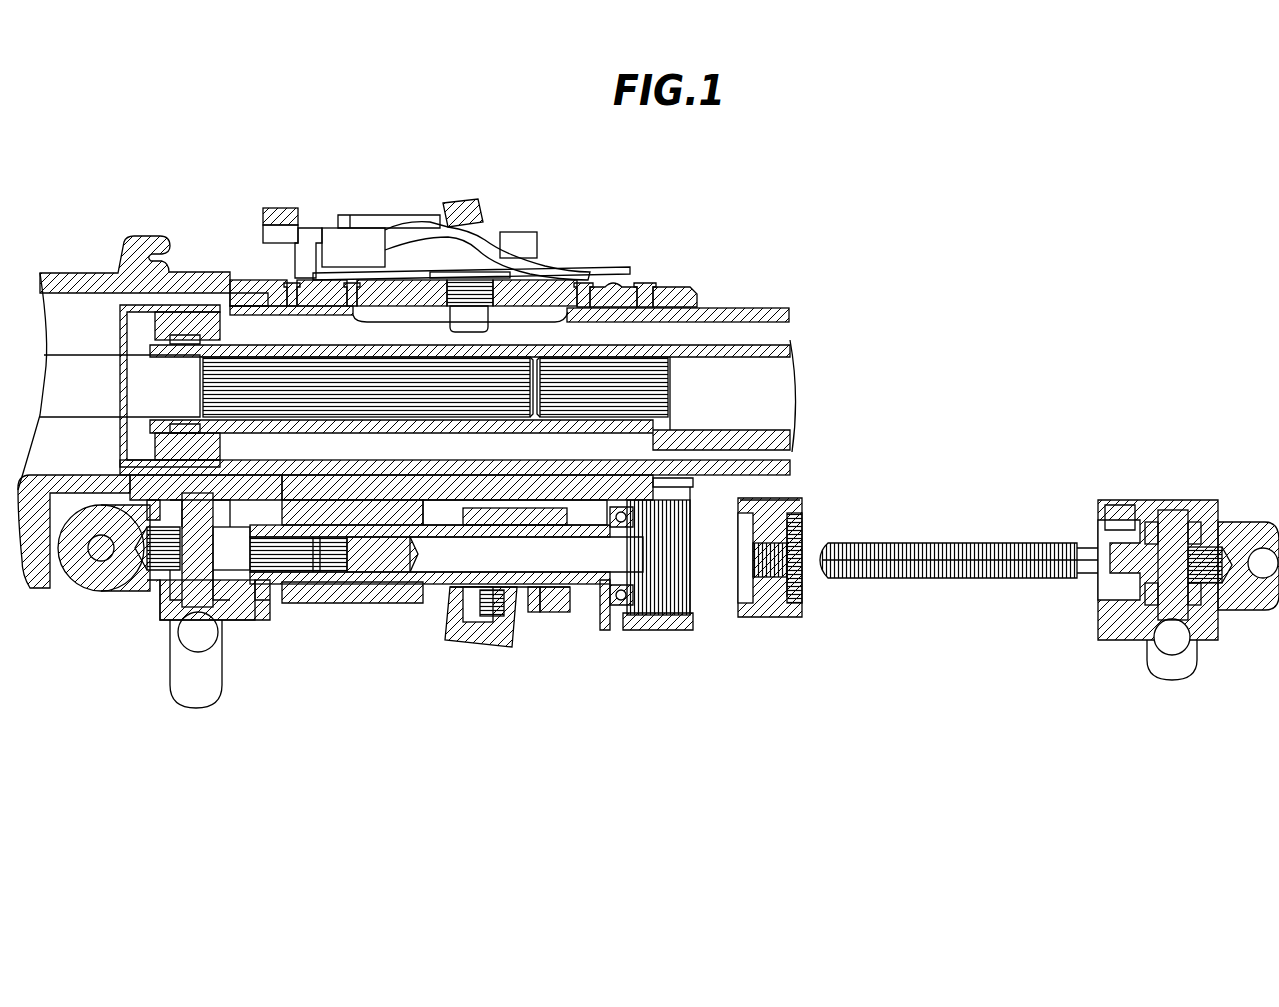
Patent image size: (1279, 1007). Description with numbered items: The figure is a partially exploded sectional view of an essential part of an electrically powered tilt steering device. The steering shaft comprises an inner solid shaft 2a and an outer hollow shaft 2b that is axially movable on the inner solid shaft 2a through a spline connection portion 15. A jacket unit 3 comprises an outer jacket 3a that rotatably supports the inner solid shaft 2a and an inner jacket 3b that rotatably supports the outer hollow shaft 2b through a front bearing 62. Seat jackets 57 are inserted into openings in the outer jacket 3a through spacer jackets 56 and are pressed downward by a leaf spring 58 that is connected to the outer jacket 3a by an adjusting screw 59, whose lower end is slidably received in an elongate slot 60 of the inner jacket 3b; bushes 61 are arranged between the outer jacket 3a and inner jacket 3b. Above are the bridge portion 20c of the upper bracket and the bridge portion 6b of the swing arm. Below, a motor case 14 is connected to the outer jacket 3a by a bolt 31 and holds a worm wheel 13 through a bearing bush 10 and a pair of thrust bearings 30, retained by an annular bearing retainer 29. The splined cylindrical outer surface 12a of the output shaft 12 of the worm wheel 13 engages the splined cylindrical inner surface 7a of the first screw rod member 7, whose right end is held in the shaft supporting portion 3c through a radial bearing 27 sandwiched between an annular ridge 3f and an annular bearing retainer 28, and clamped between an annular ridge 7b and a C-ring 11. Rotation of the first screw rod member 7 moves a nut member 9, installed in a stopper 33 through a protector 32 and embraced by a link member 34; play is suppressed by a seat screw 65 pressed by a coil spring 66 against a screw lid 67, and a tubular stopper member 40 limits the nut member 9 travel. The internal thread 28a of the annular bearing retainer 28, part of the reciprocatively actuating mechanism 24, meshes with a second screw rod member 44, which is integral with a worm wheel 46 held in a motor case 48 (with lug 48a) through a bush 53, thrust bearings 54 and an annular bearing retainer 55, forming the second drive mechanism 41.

The inner solid shaft 2a is at (92, 362).
The outer hollow shaft 2b is at (760, 373).
The jacket unit 3 is at (782, 207).
The outer jacket 3a is at (683, 291).
The inner jacket 3b is at (748, 308).
The shaft supporting portion 3c is at (683, 630).
The annular ridge 3f is at (598, 612).
The bridge portion 6b is at (460, 203).
The first screw rod member 7 is at (383, 575).
The splined cylindrical inner surface 7a is at (288, 572).
The annular ridge 7b is at (607, 595).
The nut member 9 is at (450, 616).
The bearing bush 10 is at (162, 575).
The C-ring 11 is at (647, 595).
The output shaft 12 is at (215, 590).
The splined cylindrical outer surface 12a is at (237, 572).
The worm wheel 13 is at (208, 640).
The motor case 14 is at (108, 590).
The spline connection portion 15 is at (240, 322).
The bridge portion 20c is at (300, 208).
The reciprocatively actuating mechanism 24 is at (487, 728).
The radial bearing 27 is at (620, 607).
The annular bearing retainer 28 is at (772, 607).
The internal thread 28a is at (798, 525).
The annular bearing retainer 29 is at (237, 600).
The thrust bearings 30 is at (172, 612).
The bolt 31 is at (100, 560).
The protector 32 is at (533, 602).
The stopper 33 is at (550, 612).
The link member 34 is at (460, 638).
The tubular stopper member 40 is at (330, 572).
The screw mechanism 41 is at (975, 672).
The second screw rod member 44 is at (988, 543).
The worm wheel 46 is at (1177, 525).
The motor case 48 is at (1117, 638).
The housing lug 48a is at (1240, 607).
The bush 53 is at (1213, 545).
The thrust bearings 54 is at (1150, 523).
The annular bearing retainer 55 is at (1112, 508).
The spacer jackets 56 is at (590, 286).
The seat jackets 57 is at (612, 290).
The leaf spring 58 is at (570, 272).
The adjusting screw 59 is at (478, 272).
The elongate slot 60 is at (388, 250).
The bushes 61 is at (260, 378).
The front bearing 62 is at (197, 320).
The seat screw 65 is at (503, 600).
The coil spring 66 is at (493, 628).
The screw lid 67 is at (510, 614).